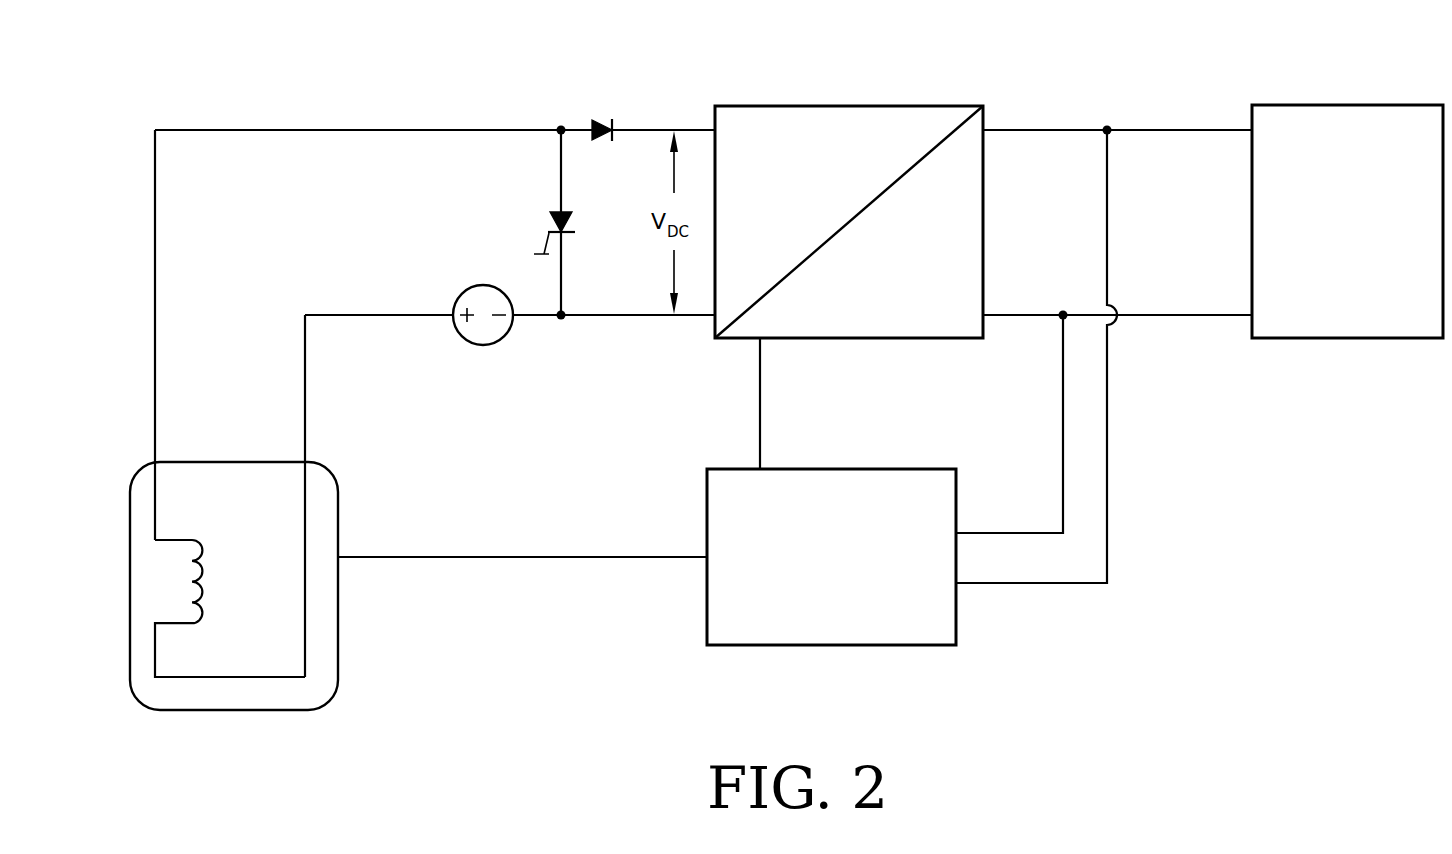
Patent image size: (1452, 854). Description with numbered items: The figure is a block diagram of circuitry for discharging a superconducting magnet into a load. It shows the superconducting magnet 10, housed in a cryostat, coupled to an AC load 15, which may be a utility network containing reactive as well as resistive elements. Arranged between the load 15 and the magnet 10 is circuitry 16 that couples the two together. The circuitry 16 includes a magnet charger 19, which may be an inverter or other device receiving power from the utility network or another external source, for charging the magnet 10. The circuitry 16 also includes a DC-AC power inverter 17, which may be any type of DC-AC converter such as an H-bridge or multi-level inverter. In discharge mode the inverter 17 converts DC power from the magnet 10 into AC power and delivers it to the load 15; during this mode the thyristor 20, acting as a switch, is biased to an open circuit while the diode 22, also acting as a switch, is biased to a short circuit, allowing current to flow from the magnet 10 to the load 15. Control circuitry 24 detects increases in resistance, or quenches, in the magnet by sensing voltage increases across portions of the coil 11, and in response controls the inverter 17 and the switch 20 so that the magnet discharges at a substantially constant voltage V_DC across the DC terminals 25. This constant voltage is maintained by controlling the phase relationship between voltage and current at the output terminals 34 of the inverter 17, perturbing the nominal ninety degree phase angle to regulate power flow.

The superconducting magnet 10 is at (338, 640).
The coil 11 is at (200, 549).
The AC load 15 is at (1350, 340).
The circuitry 16 is at (575, 634).
The DC-AC power inverter 17 is at (836, 106).
The magnet charger 19 is at (493, 285).
The thyristor 20 is at (575, 233).
The diode 22 is at (612, 119).
The control circuitry 24 is at (782, 647).
The terminals 25 is at (696, 130).
The output terminals 34 is at (1025, 136).